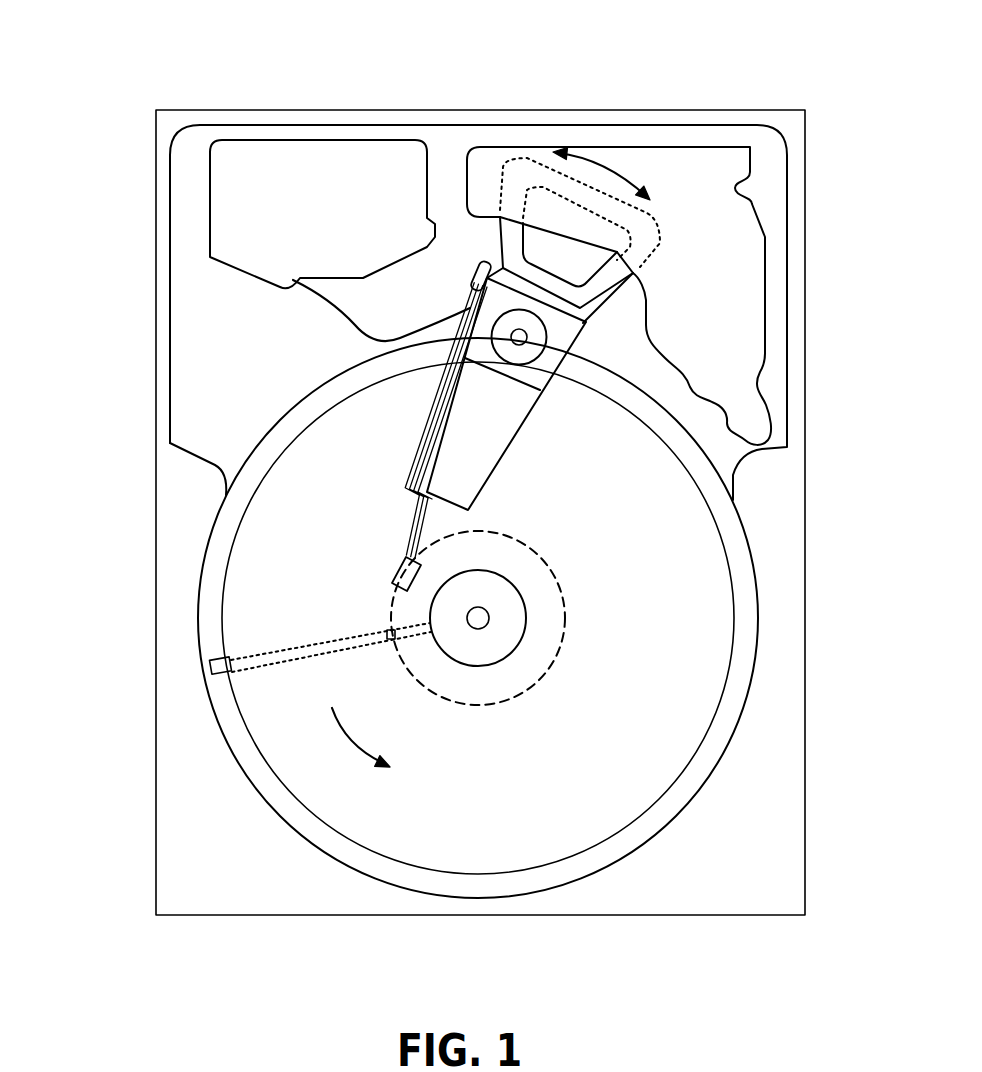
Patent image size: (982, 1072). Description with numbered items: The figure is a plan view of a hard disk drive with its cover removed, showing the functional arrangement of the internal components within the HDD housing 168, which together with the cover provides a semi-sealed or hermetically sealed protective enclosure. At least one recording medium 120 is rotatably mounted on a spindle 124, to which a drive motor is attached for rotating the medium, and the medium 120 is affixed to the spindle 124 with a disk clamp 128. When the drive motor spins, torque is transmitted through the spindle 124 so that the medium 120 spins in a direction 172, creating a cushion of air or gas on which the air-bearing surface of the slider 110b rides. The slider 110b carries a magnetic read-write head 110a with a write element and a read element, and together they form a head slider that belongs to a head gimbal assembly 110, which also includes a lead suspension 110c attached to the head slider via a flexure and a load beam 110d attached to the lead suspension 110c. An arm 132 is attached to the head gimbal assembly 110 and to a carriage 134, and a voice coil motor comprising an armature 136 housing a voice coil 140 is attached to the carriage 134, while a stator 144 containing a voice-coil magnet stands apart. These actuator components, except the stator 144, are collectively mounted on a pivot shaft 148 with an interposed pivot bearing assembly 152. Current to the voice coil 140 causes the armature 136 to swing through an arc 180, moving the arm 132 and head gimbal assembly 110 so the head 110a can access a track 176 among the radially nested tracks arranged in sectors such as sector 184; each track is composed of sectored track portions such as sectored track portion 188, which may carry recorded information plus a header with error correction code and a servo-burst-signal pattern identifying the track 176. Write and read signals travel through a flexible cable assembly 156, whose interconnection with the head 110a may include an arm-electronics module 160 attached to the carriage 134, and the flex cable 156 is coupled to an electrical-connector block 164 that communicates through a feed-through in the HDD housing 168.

The head gimbal assembly 110 is at (82, 423).
The magnetic read-write head 110a is at (403, 573).
The slider 110b is at (406, 550).
The lead suspension 110c is at (418, 525).
The load beam 110d is at (433, 510).
The recording medium 120 is at (663, 565).
The spindle 124 is at (482, 618).
The disk clamp 128 is at (503, 633).
The arm 132 is at (472, 453).
The carriage 134 is at (540, 372).
The armature 136 is at (497, 253).
The voice coil 140 is at (513, 227).
The stator 144 is at (730, 238).
The pivot shaft 148 is at (525, 338).
The pivot bearing assembly 152 is at (533, 351).
The flexible cable assembly 156 is at (337, 313).
The arm-electronics module 160 is at (472, 308).
The electrical-connector block 164 is at (237, 212).
The HDD housing 168 is at (783, 123).
The direction 172 is at (367, 745).
The track 176 is at (553, 580).
The arc 180 is at (600, 162).
The sector 184 is at (210, 658).
The sectored track portion 188 is at (385, 629).